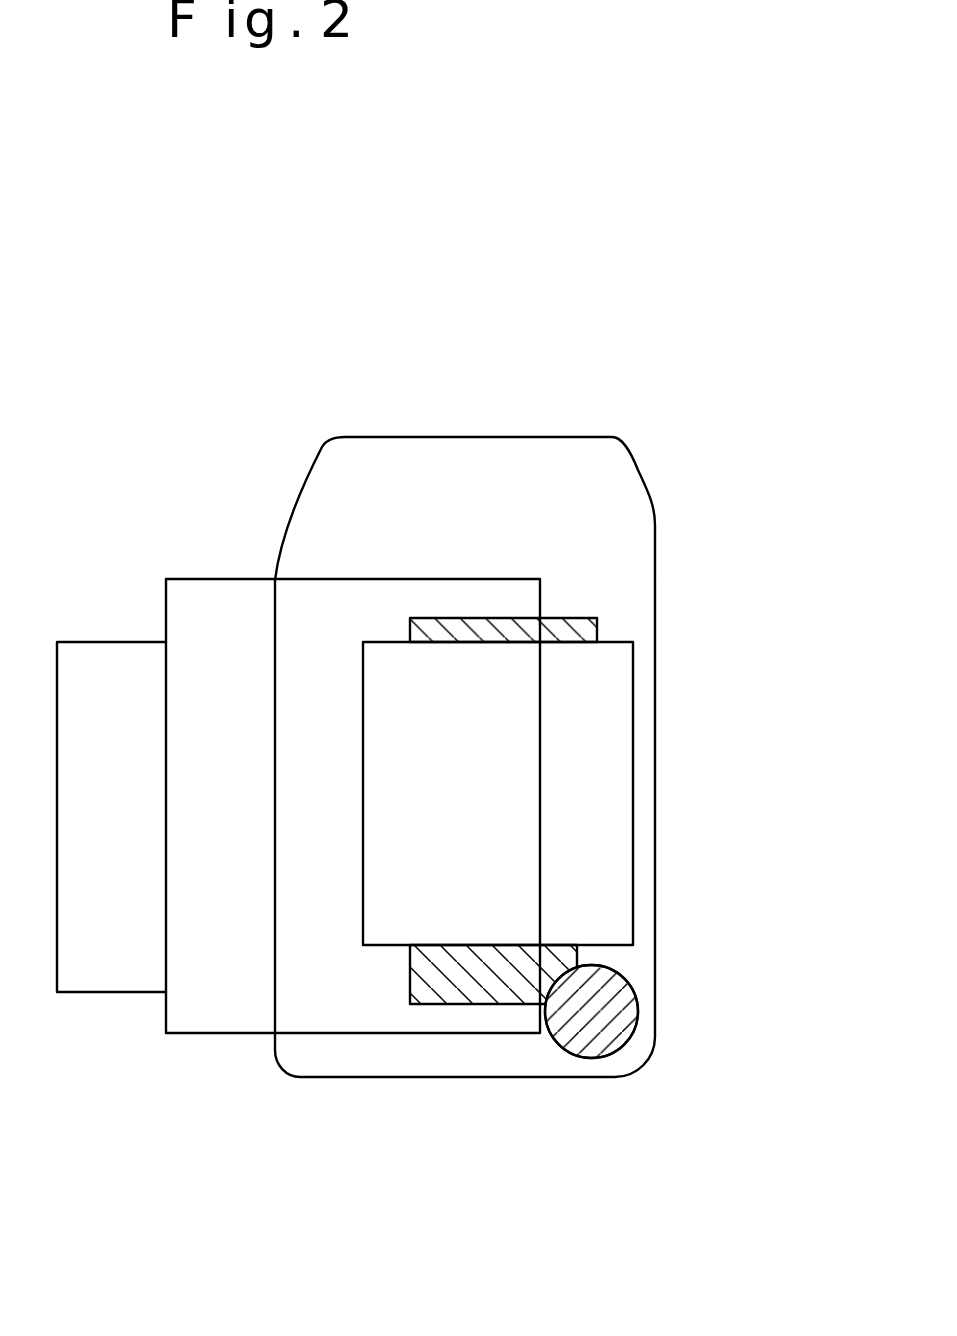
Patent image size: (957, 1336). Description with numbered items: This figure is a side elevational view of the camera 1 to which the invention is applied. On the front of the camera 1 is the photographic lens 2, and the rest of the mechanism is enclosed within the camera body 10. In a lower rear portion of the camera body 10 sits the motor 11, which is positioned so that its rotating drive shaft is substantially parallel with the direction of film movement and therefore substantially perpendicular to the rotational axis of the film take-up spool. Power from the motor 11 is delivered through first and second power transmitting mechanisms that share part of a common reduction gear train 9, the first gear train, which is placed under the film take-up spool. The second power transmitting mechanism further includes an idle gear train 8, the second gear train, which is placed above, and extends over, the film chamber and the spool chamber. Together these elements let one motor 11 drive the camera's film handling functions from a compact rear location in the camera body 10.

The camera 1 is at (659, 241).
The photographic lens 2 is at (191, 1040).
The idle gear train 8 is at (573, 630).
The common reduction gear train 9 is at (457, 978).
The camera body 10 is at (472, 434).
The motor 11 is at (603, 1022).